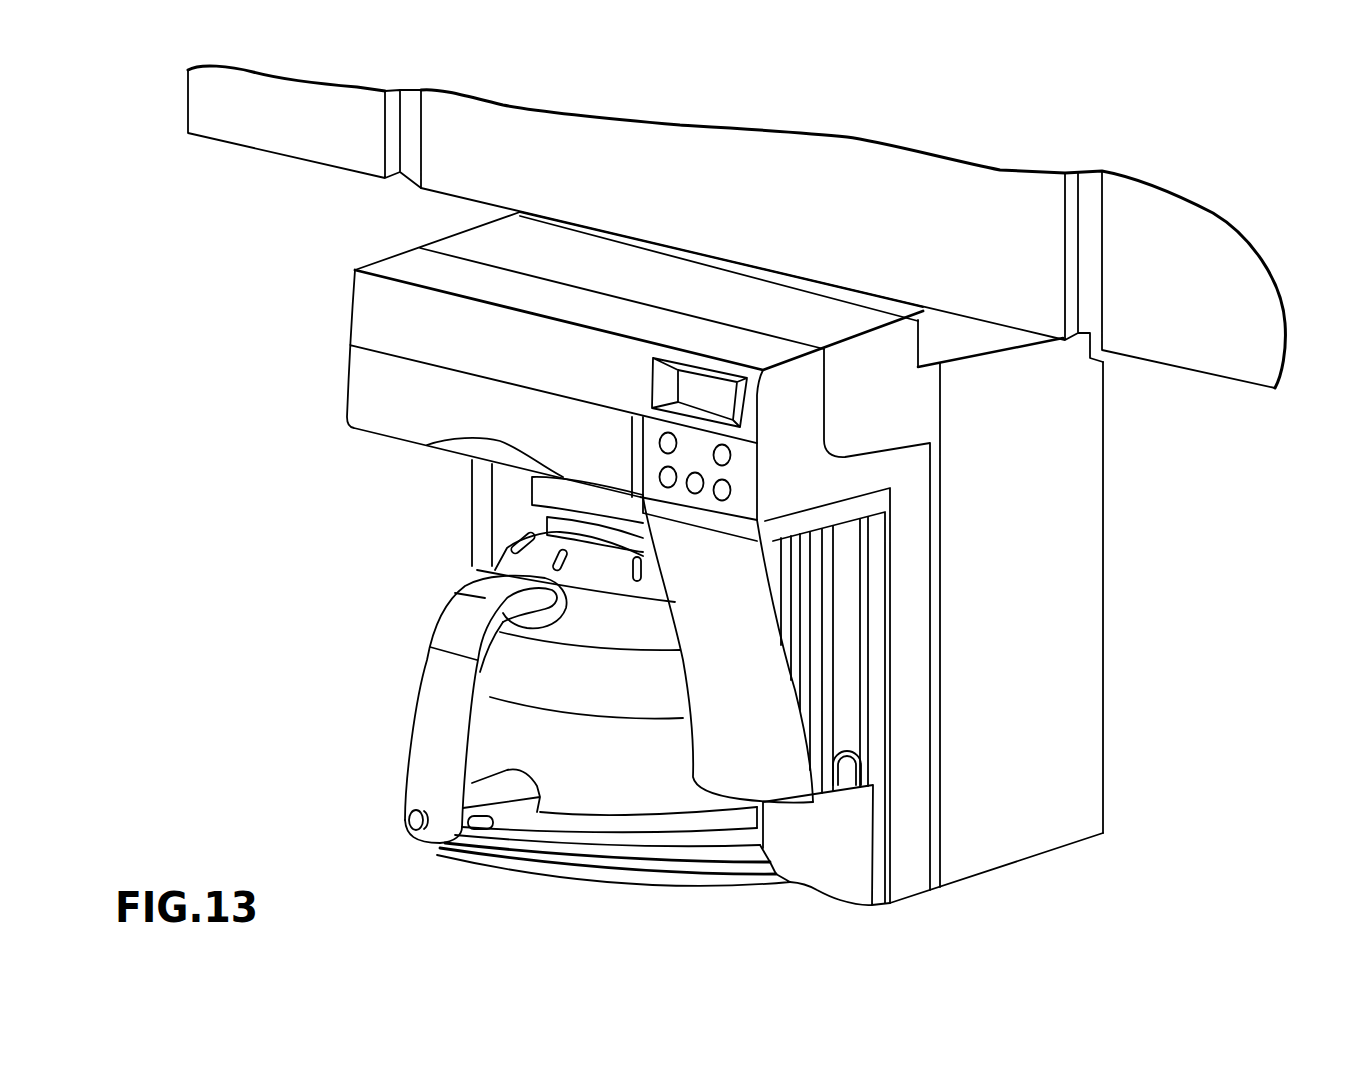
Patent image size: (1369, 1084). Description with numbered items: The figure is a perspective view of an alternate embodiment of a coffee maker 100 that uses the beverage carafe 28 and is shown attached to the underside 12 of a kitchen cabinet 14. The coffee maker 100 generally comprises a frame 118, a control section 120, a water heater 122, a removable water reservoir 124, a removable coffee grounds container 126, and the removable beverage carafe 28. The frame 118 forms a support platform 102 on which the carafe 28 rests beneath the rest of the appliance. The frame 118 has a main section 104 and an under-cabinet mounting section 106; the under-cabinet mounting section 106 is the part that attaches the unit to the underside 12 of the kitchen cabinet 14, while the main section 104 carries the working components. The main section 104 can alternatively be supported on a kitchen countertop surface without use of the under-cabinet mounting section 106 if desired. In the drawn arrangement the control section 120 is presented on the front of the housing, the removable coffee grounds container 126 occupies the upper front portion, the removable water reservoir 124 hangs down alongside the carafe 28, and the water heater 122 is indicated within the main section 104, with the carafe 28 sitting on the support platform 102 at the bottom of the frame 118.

The underside 12 is at (296, 197).
The kitchen cabinet 14 is at (826, 153).
The carafe 28 is at (415, 707).
The coffee maker 100 is at (1132, 885).
The support platform 102 is at (507, 870).
The main section 104 is at (1075, 540).
The under-cabinet mounting section 106 is at (975, 328).
The frame 118 is at (1078, 777).
The control section 120 is at (653, 461).
The water heater 122 is at (1050, 652).
The removable water reservoir 124 is at (723, 750).
The removable coffee grounds container 126 is at (375, 393).